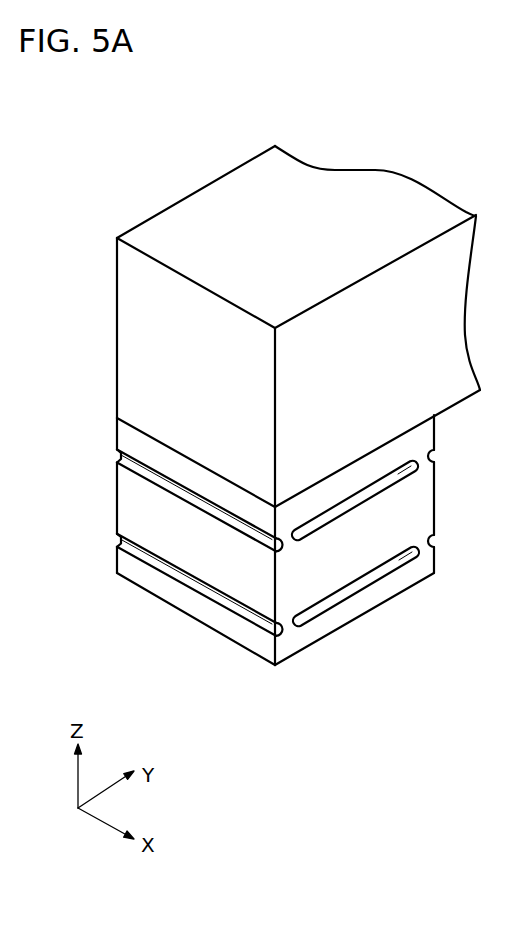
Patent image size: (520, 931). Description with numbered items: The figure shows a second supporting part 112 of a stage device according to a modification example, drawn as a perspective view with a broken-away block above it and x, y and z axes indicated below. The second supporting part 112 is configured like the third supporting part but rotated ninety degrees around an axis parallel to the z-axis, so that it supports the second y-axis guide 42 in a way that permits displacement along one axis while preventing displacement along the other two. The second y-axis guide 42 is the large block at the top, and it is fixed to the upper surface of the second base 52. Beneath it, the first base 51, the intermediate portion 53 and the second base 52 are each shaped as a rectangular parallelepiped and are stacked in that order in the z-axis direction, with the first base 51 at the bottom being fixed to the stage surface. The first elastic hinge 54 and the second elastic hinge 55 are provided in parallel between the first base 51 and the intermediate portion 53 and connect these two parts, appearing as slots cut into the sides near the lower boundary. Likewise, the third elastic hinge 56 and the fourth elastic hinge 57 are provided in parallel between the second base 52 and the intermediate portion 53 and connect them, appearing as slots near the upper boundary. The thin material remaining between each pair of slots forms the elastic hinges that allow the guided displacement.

The second y-axis guide 42 is at (190, 210).
The second supporting part 112 is at (90, 432).
The second base 52 is at (126, 442).
The intermediate portion 53 is at (128, 517).
The first base 51 is at (128, 567).
The first elastic hinge 54 is at (425, 548).
The second elastic hinge 55 is at (290, 620).
The third elastic hinge 56 is at (425, 462).
The fourth elastic hinge 57 is at (290, 540).